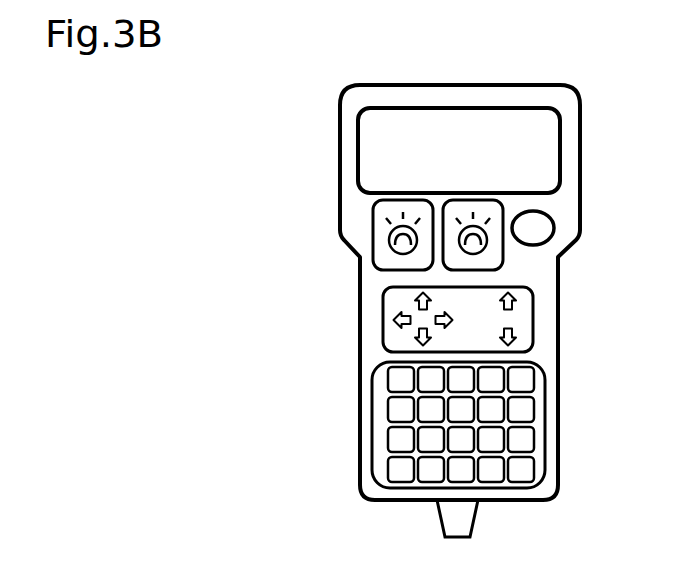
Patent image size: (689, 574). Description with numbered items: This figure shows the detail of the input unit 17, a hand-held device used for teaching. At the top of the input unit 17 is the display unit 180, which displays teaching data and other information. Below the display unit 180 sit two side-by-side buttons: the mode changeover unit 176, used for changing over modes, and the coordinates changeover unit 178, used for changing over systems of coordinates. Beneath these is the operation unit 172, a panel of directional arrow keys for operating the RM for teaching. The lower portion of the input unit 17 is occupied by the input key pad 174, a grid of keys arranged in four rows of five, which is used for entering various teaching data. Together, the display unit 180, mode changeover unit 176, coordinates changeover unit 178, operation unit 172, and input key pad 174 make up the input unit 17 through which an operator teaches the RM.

The input unit 17 is at (594, 73).
The display unit 180 is at (383, 145).
The mode changeover unit 176 is at (383, 212).
The coordinates changeover unit 178 is at (493, 250).
The operation unit 172 is at (393, 300).
The input key pad 174 is at (383, 392).